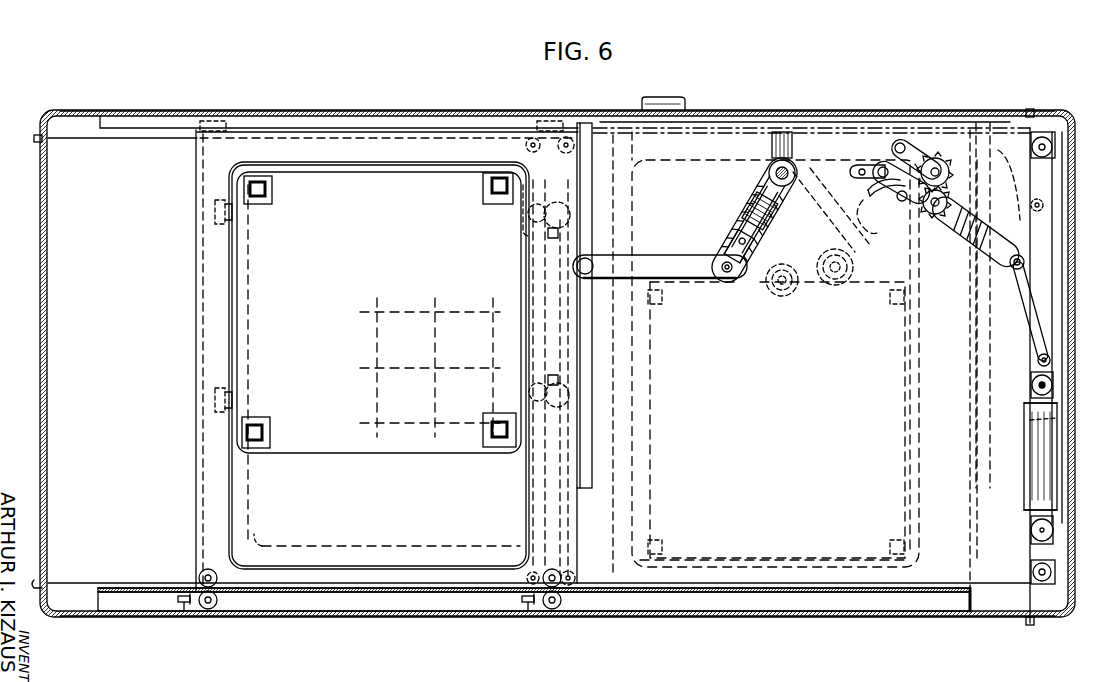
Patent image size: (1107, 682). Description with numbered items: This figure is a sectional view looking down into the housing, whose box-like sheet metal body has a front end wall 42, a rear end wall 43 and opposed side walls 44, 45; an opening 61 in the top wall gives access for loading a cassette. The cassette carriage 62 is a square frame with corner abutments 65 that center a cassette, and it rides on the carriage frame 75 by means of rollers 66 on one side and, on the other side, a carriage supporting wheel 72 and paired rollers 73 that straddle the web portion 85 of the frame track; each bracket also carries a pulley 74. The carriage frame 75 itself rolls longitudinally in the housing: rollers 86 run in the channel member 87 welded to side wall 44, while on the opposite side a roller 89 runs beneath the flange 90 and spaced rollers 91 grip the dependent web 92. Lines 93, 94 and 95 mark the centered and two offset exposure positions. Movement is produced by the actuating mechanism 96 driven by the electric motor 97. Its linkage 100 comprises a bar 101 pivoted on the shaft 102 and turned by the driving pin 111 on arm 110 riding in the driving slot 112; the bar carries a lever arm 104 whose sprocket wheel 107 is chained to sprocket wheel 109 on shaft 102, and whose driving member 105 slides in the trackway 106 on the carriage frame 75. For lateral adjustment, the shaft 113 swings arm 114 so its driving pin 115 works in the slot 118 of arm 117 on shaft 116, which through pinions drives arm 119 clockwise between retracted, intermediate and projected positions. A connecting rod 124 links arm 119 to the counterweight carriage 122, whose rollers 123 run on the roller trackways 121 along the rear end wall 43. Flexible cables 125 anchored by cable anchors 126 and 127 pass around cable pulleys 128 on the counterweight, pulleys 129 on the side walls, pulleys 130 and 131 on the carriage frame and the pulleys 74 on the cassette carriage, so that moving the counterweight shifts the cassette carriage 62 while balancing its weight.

The front end wall 42 is at (40, 335).
The rear end wall 43 is at (1060, 292).
The side wall 44 is at (330, 110).
The side wall 45 is at (352, 617).
The opening 61 is at (272, 545).
The cassette carriage 62 is at (226, 294).
The abutments 65 is at (266, 188).
The rollers 66 is at (220, 200).
The carriage supporting wheel 72 is at (540, 245).
The rollers 73 is at (545, 225).
The pulley 74 is at (532, 205).
The carriage frame 75 is at (194, 260).
The web portion 85 is at (520, 285).
The rollers 86 is at (206, 112).
The channel member 87 is at (157, 116).
The roller 89 is at (184, 610).
The flange 90 is at (124, 612).
The rollers 91 is at (208, 568).
The web 92 is at (128, 586).
The centered position line 93 is at (436, 341).
The offset position line 94 is at (378, 351).
The offset position line 95 is at (488, 393).
The actuating mechanism 96 is at (745, 136).
The electric motor 97 is at (680, 98).
The linkage 100 is at (822, 292).
The bar 101 is at (738, 223).
The shaft 102 is at (793, 162).
The lever arm 104 is at (660, 262).
The driving member 105 is at (612, 227).
The trackway 106 is at (592, 211).
The sprocket wheel 107 is at (727, 280).
The sprocket wheel 109 is at (747, 142).
The arm 110 is at (762, 197).
The driving pin 111 is at (740, 201).
The driving slot 112 is at (732, 233).
The shaft 113 is at (837, 349).
The arm 114 is at (892, 150).
The driving pin 115 is at (902, 140).
The shaft 116 is at (940, 158).
The arm 117 is at (883, 160).
The slot 118 is at (870, 226).
The arm 119 is at (985, 237).
The roller trackways 121 is at (1060, 345).
The carriage 122 is at (1030, 455).
The rollers 123 is at (1028, 421).
The connecting rod 124 is at (1030, 312).
The flexible cable 125 is at (62, 140).
The cable anchor 126 is at (36, 137).
The cable anchor 127 is at (1030, 109).
The cable pulley 128 is at (1032, 385).
The pulley 129 is at (1044, 136).
The pulley 130 is at (576, 145).
The pulley 131 is at (526, 146).